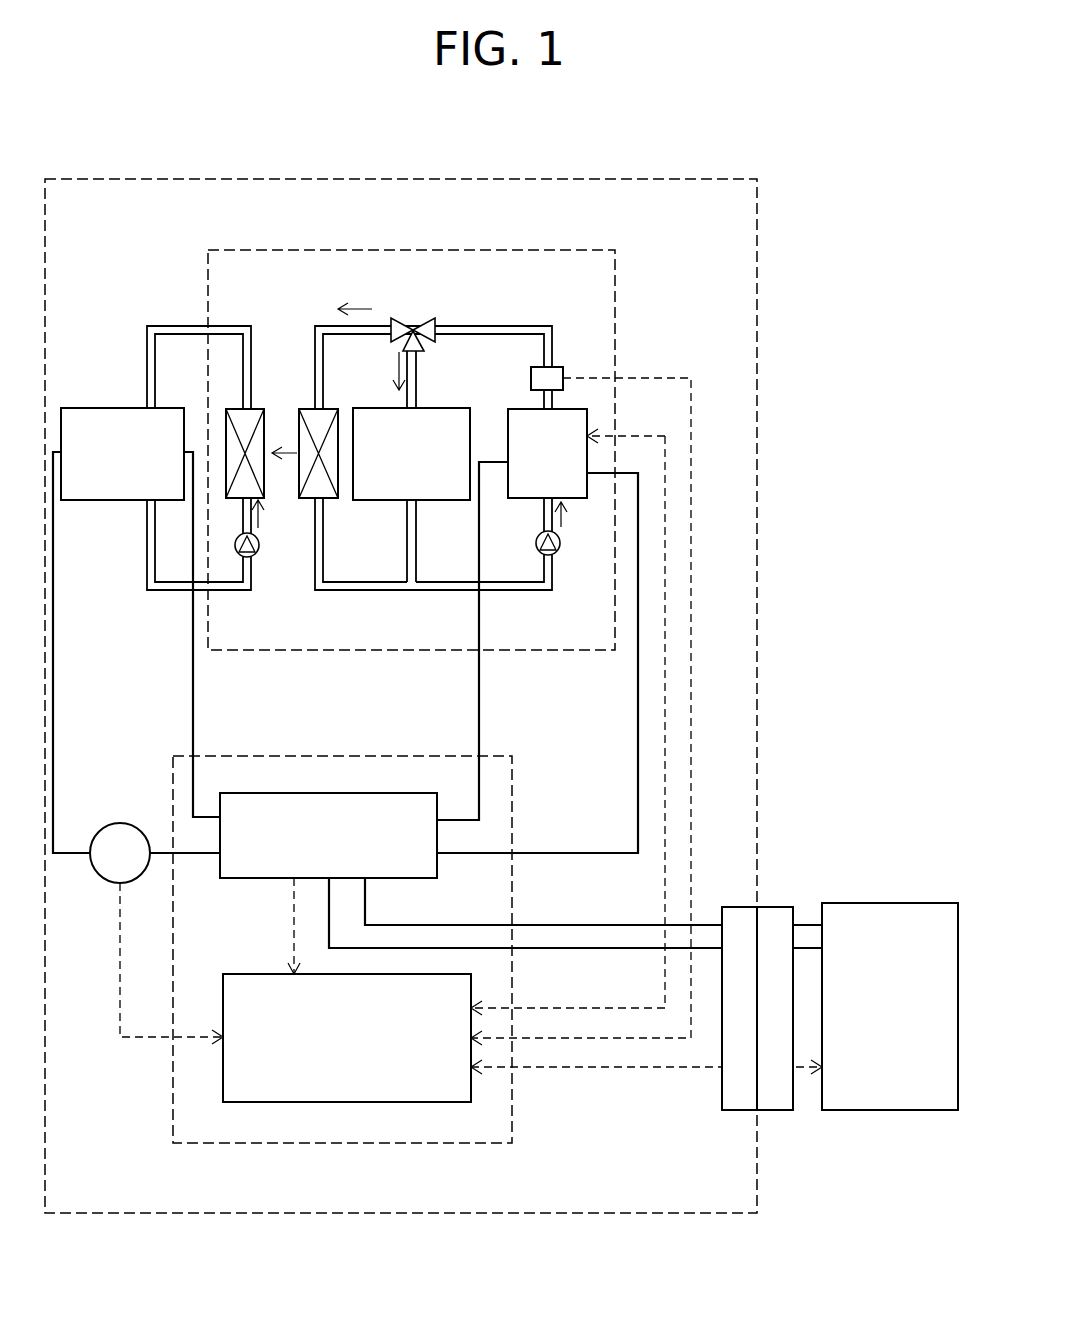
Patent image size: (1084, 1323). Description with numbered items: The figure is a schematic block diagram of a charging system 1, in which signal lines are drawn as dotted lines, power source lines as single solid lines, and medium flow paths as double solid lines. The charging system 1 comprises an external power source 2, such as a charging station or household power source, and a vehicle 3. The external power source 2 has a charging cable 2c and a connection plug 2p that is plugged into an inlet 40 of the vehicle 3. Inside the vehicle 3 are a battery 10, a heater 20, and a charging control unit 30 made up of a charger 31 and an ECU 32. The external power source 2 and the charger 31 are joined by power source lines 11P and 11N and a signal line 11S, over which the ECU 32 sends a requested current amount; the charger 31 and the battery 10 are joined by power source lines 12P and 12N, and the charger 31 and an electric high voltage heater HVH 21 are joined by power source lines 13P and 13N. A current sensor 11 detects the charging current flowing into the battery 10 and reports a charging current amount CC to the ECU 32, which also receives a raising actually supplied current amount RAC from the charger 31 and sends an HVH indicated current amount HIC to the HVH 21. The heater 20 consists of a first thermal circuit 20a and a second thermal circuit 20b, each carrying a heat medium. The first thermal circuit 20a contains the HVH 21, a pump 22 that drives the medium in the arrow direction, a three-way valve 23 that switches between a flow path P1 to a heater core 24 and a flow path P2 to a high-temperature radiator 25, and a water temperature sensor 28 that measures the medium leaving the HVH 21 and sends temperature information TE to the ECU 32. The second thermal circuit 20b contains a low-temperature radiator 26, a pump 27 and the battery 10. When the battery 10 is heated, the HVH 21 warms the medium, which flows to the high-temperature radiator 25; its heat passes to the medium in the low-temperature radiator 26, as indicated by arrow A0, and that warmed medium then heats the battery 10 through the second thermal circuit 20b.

The charging system 1 is at (910, 106).
The external power source 2 is at (912, 903).
The connection plug 2p is at (775, 907).
The charging cable 2c is at (805, 912).
The vehicle 3 is at (740, 178).
The battery 10 is at (90, 407).
The current sensor 11 is at (120, 823).
The power source line 12N is at (53, 697).
The power source line 12P is at (193, 697).
The power source line 13N is at (479, 697).
The power source line 13P is at (638, 697).
The power source line 11P is at (588, 925).
The power source line 11N is at (582, 948).
The signal line 11S is at (585, 1067).
The heater 20 is at (597, 250).
The first thermal circuit 20a is at (482, 318).
The second thermal circuit 20b is at (233, 318).
The electric high voltage heater (HVH) 21 is at (520, 408).
The pump 22 is at (560, 548).
The three-way valve 23 is at (422, 319).
The heater core 24 is at (432, 408).
The high-temperature radiator 25 is at (330, 408).
The low-temperature radiator 26 is at (257, 408).
The pump 27 is at (259, 548).
The water temperature sensor 28 is at (555, 366).
The charging control unit 30 is at (513, 778).
The charger 31 is at (400, 880).
The electronic control unit (ECU) 32 is at (238, 974).
The inlet 40 is at (740, 907).
The flow path P1 is at (398, 365).
The flow path P2 is at (358, 307).
The arrow A0 is at (290, 458).
The HVH indicated current amount HIC is at (638, 433).
The temperature information TE is at (688, 376).
The charging current amount CC is at (120, 952).
The raising actually supplied current amount RAC is at (294, 915).